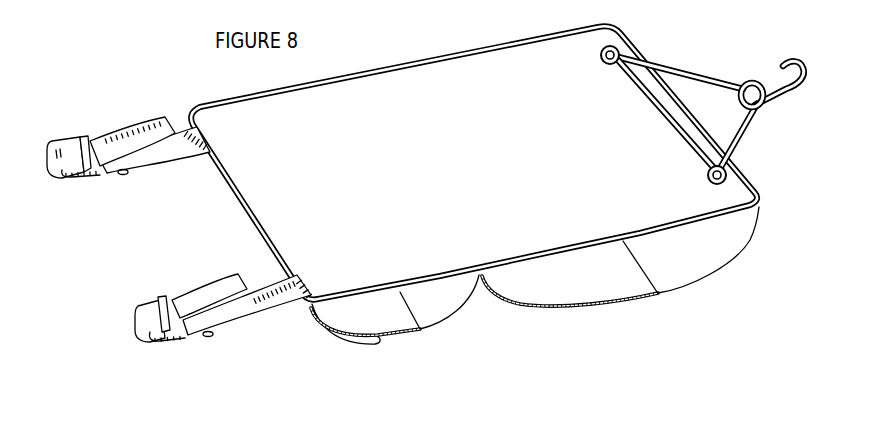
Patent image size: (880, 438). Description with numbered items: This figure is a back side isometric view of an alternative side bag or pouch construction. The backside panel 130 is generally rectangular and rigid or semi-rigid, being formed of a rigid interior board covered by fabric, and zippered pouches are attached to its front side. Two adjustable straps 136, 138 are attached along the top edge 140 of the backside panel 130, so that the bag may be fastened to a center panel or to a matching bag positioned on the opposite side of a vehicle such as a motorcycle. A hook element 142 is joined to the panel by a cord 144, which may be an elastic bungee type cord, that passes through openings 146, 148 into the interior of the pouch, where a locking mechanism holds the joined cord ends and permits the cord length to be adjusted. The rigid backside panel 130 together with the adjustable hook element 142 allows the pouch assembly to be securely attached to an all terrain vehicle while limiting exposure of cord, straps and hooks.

The backside panel 130 is at (411, 197).
The adjustable strap 136 is at (240, 320).
The adjustable strap 138 is at (175, 158).
The top edge 140 is at (248, 233).
The hook element 142 is at (795, 91).
The cord 144 is at (748, 127).
The opening 146 is at (704, 174).
The opening 148 is at (600, 57).